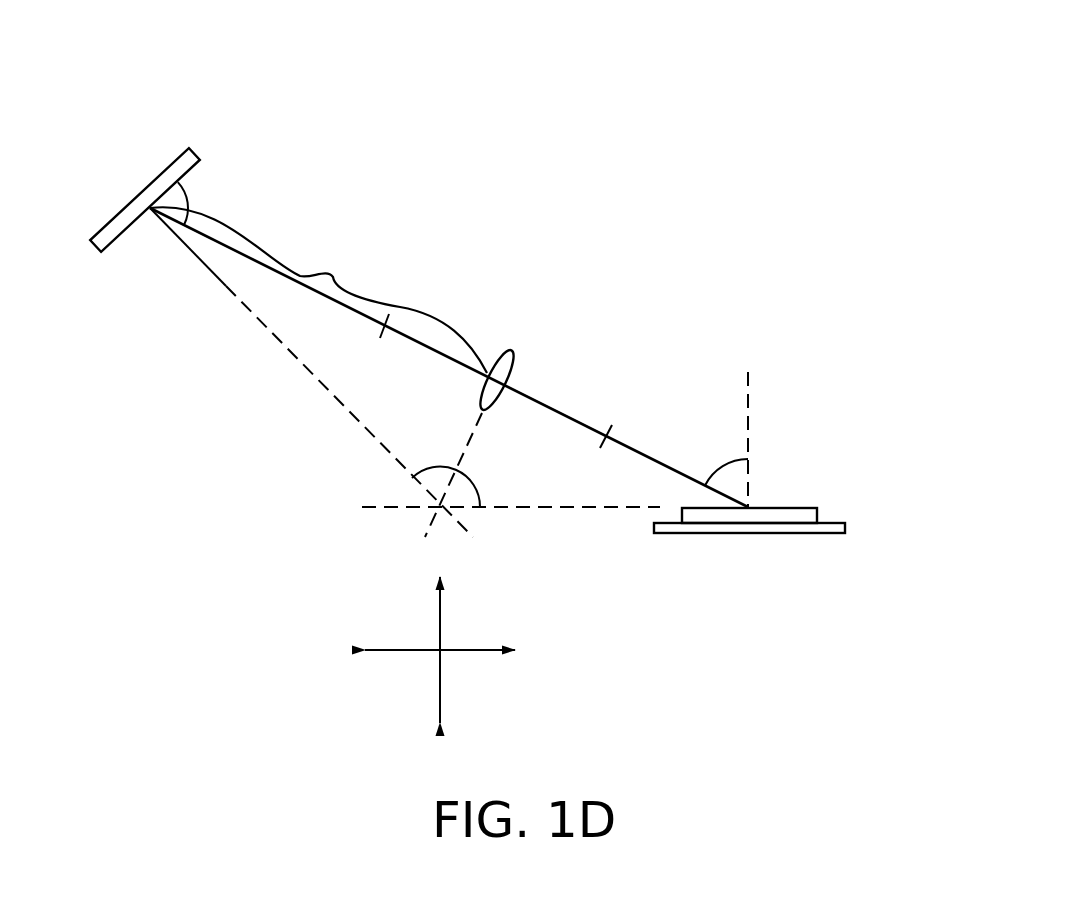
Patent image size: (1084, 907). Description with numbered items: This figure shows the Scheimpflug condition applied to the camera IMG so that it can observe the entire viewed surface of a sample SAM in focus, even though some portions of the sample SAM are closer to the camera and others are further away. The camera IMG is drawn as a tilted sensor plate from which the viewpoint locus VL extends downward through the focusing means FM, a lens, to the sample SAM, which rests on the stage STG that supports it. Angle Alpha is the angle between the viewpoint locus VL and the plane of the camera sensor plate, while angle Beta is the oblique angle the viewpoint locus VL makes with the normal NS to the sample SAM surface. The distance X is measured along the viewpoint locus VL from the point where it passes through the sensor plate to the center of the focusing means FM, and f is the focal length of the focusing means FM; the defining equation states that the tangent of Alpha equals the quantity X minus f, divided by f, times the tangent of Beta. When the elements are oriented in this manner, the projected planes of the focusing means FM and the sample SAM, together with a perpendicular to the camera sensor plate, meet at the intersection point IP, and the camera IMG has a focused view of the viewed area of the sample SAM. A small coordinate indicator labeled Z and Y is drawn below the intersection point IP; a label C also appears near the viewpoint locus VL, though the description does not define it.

The camera IMG is at (172, 153).
The viewpoint locus VL is at (229, 242).
The distance from camera sensor plate to center of focusing means X is at (318, 290).
The focal length f is at (405, 306).
The focusing means FM is at (517, 364).
The camera C is at (500, 243).
The normal to the sample surface NS is at (762, 437).
The stage STG is at (858, 522).
The sample SAM is at (778, 530).
The intersection point IP is at (422, 517).
The Z axis Z is at (458, 649).
The Y axis Y is at (451, 652).